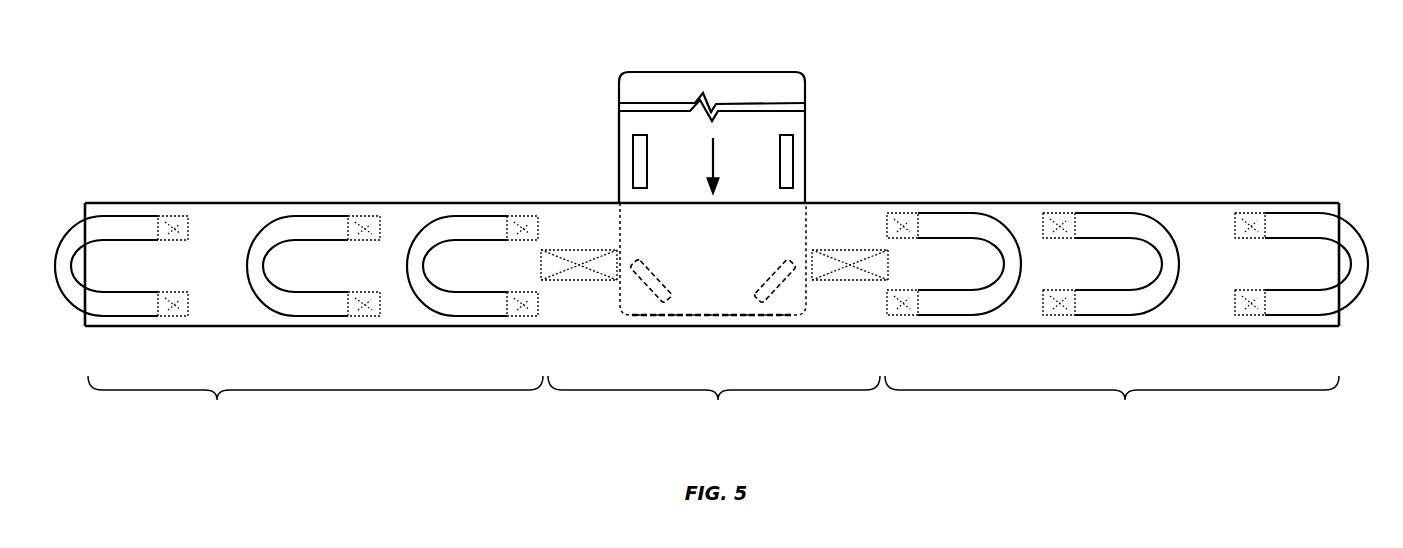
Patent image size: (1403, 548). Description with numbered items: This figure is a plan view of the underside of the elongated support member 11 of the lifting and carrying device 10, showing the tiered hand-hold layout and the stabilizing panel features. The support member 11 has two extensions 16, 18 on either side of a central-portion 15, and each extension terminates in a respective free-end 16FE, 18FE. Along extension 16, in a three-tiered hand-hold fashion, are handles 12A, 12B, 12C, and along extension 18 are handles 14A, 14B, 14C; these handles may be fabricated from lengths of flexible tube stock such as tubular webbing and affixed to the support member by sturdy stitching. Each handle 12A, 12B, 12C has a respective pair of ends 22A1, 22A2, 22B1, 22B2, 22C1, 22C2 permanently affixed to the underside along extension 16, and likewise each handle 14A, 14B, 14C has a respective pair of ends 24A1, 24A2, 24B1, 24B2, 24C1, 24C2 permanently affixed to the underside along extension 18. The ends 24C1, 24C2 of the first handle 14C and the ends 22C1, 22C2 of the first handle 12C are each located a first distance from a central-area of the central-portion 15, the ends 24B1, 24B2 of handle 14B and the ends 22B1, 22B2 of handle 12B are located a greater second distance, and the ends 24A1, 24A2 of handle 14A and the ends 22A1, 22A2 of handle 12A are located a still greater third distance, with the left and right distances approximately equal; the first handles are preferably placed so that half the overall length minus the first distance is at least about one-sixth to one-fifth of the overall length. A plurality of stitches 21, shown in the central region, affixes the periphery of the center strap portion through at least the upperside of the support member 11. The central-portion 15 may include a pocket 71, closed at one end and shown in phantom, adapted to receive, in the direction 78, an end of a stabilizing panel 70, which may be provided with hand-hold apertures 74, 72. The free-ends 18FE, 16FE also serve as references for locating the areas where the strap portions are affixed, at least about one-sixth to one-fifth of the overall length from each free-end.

The device 10 is at (1101, 111).
The elongated support member 11 is at (843, 202).
The handle 12A is at (1314, 225).
The handle 12B is at (1125, 225).
The handle 12C is at (970, 225).
The handle 14A is at (112, 227).
The handle 14B is at (273, 227).
The handle 14C is at (436, 228).
The central-portion 15 is at (714, 399).
The extension 16 is at (1112, 402).
The free-end 16FE is at (1353, 343).
The extension 18 is at (315, 404).
The free-end 18FE is at (72, 174).
The stitches 21 is at (584, 280).
The end of handle 22A1 is at (1255, 226).
The end of handle 22A2 is at (1255, 320).
The end of handle 22B1 is at (1062, 226).
The end of handle 22B2 is at (1062, 320).
The end of handle 22C1 is at (905, 226).
The end of handle 22C2 is at (905, 320).
The end of handle 24A1 is at (170, 226).
The end of handle 24A2 is at (175, 312).
The end of handle 24B1 is at (368, 226).
The end of handle 24B2 is at (368, 312).
The end of handle 24C1 is at (522, 226).
The end of handle 24C2 is at (526, 322).
The stabilizing panel 70 is at (627, 124).
The pocket 71 is at (674, 316).
The hand-hold aperture 72 is at (788, 155).
The hand-hold aperture 74 is at (637, 160).
The direction 78 is at (714, 153).